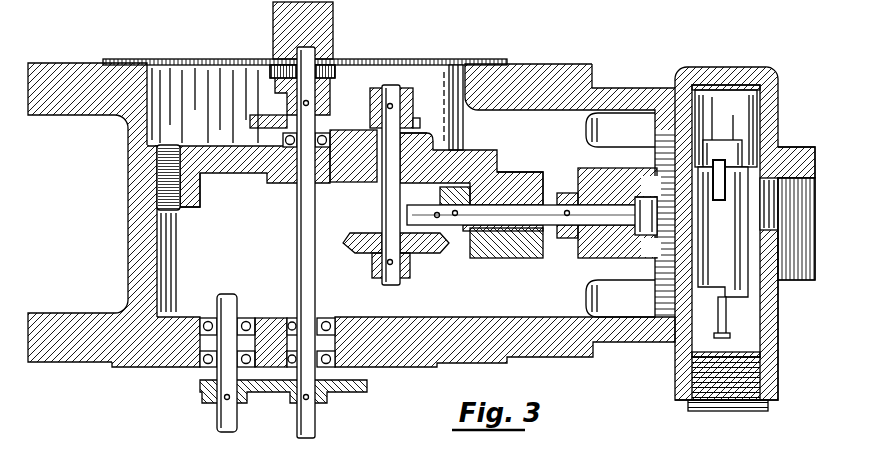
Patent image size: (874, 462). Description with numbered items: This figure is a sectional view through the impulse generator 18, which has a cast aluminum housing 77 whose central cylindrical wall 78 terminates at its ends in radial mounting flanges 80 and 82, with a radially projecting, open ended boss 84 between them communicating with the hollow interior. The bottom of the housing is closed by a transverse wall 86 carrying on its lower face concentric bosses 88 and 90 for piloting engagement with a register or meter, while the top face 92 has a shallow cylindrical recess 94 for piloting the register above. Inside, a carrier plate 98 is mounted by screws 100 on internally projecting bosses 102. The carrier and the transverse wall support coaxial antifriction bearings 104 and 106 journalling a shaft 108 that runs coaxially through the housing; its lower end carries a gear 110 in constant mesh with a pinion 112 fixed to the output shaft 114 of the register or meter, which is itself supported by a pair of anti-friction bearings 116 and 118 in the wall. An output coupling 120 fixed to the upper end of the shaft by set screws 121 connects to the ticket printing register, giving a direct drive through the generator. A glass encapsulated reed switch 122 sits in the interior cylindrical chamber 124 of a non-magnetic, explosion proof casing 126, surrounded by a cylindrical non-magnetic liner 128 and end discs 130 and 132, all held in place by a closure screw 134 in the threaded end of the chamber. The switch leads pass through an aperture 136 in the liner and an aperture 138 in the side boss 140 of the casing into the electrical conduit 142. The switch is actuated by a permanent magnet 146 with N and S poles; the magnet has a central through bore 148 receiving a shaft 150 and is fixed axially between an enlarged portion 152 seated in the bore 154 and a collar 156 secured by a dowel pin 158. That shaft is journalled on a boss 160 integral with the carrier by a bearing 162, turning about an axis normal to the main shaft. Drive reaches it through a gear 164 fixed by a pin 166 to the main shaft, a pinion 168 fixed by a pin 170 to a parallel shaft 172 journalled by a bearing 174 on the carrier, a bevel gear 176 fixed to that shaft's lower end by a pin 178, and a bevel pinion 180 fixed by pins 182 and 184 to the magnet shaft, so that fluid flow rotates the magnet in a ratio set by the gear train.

The impulse generator 18 is at (166, 52).
The housing 77 is at (134, 232).
The central cylindrical wall 78 is at (130, 149).
The radial mounting flange 80 is at (64, 322).
The radial mounting flange 82 is at (55, 72).
The radially projecting boss 84 is at (645, 88).
The transverse wall 86 is at (413, 327).
The concentric boss 88 is at (110, 366).
The concentric boss 90 is at (183, 365).
The top face 92 is at (557, 66).
The shallow cylindrical recess 94 is at (506, 64).
The carrier plate 98 is at (230, 146).
The screw 100 is at (163, 141).
The internally projecting boss 102 is at (196, 198).
The antifriction bearing 104 is at (230, 145).
The antifriction bearing 106 is at (282, 349).
The shaft 108 is at (295, 253).
The gear 110 is at (344, 394).
The pinion 112 is at (212, 389).
The output shaft 114 is at (217, 302).
The anti-friction bearing 116 is at (200, 325).
The anti-friction bearing 118 is at (200, 356).
The output coupling 120 is at (275, 23).
The set screw 121 is at (335, 64).
The reed switch 122 is at (744, 149).
The interior cylindrical chamber 124 is at (758, 106).
The casing 126 is at (755, 73).
The liner 128 is at (767, 343).
The end disc 130 is at (717, 84).
The end disc 132 is at (694, 352).
The closure screw 134 is at (705, 401).
The aperture 136 is at (759, 181).
The aperture 138 is at (796, 162).
The side boss 140 is at (784, 252).
The electrical conduit 142 is at (792, 278).
The magnet 146 is at (620, 260).
The central through bore 148 is at (619, 186).
The shaft 150 is at (619, 241).
The enlarged portion 152 is at (637, 213).
The bore 154 is at (640, 197).
The collar 156 is at (563, 192).
The dowel pin 158 is at (567, 239).
The boss 160 is at (527, 174).
The bearing 162 is at (515, 199).
The gear 164 is at (247, 123).
The pin 166 is at (300, 97).
The pinion 168 is at (416, 124).
The pin 170 is at (388, 106).
The shaft 172 is at (385, 194).
The bearing 174 is at (378, 160).
The bevel gear 176 is at (349, 246).
The pin 178 is at (380, 262).
The bevel pinion 180 is at (450, 180).
The pin 182 is at (410, 212).
The pin 184 is at (462, 225).